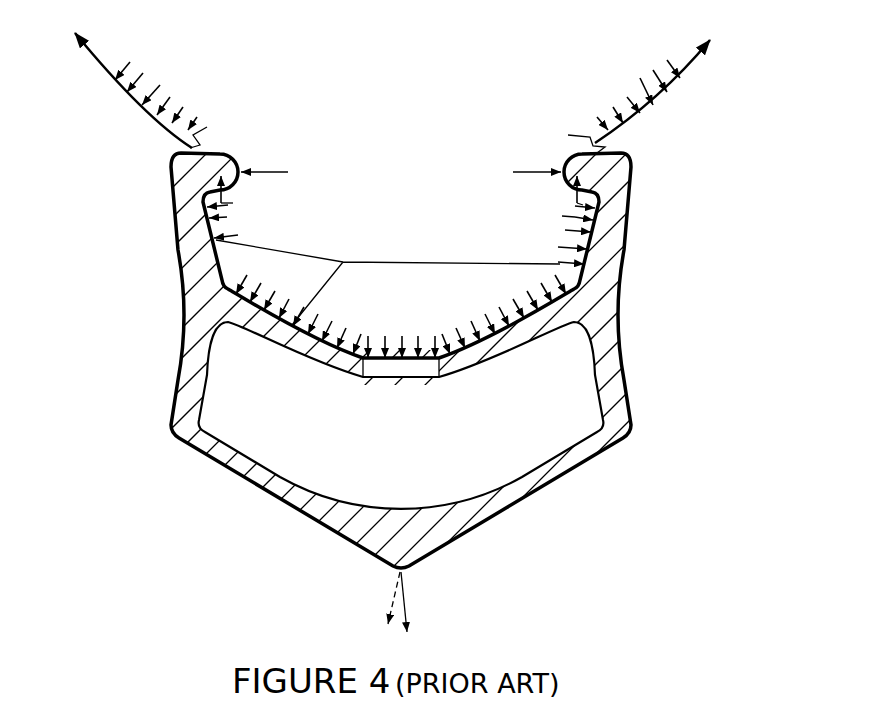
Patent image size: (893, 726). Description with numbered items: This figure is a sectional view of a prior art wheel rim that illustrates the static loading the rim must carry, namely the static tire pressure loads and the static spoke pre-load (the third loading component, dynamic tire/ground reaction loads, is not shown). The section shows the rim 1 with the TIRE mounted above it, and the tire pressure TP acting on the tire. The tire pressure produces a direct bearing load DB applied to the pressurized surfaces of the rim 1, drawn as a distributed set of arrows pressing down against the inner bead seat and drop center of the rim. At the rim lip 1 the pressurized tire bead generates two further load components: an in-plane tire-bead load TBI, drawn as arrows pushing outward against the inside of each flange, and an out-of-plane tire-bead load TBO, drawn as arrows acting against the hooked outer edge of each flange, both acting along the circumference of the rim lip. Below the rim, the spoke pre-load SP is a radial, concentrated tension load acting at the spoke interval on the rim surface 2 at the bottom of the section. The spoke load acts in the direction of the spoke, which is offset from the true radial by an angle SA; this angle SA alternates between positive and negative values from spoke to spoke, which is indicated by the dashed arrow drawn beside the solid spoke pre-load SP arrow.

The rim 1 is at (388, 281).
The rim surface 2 is at (513, 509).
The tire TIRE is at (386, 94).
The tire pressure force TP is at (392, 93).
The out-of-plane tire-bead load TBO is at (401, 173).
The in-plane tire-bead load TBI is at (401, 220).
The direct bearing load DB is at (401, 316).
The angle SA is at (405, 591).
The spoke pre-load SP is at (422, 612).